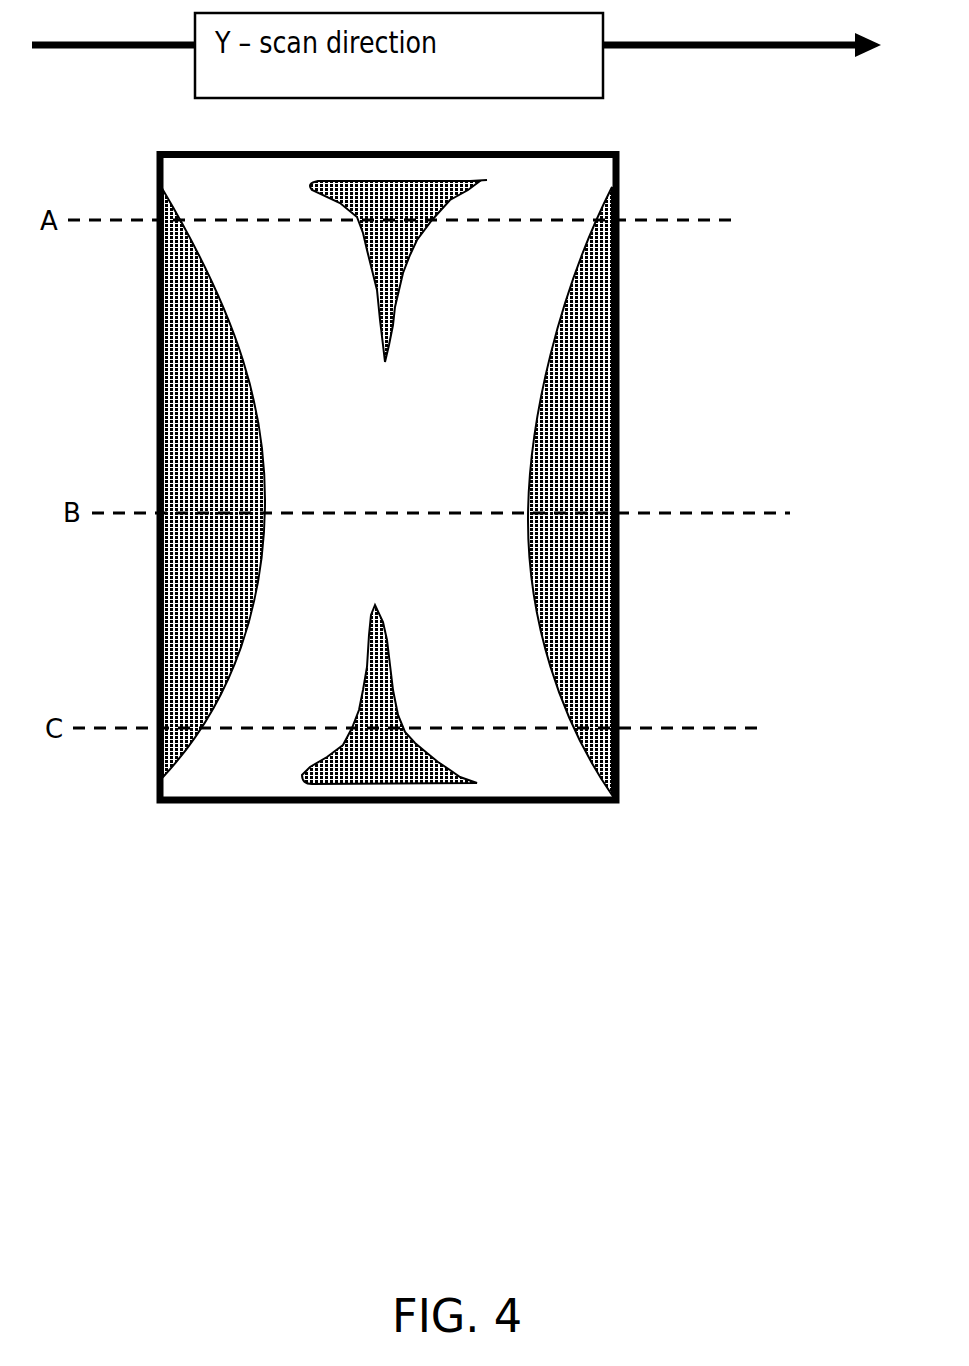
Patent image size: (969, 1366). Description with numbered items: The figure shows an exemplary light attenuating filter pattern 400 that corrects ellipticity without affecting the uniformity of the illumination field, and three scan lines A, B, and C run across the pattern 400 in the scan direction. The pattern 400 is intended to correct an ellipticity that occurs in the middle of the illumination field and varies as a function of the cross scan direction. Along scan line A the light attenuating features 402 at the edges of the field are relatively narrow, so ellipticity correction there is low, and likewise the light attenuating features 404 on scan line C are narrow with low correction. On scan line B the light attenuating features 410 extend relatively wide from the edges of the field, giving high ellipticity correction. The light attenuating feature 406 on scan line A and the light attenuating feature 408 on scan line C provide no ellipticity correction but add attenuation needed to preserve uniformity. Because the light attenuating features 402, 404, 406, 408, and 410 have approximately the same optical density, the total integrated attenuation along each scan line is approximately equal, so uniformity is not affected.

The light attenuating filter pattern 400 is at (230, 803).
The light attenuating features 402 is at (189, 210).
The light attenuating features 404 is at (194, 739).
The light attenuating feature 406 is at (408, 232).
The light attenuating feature 408 is at (394, 724).
The light attenuating features 410 is at (222, 514).